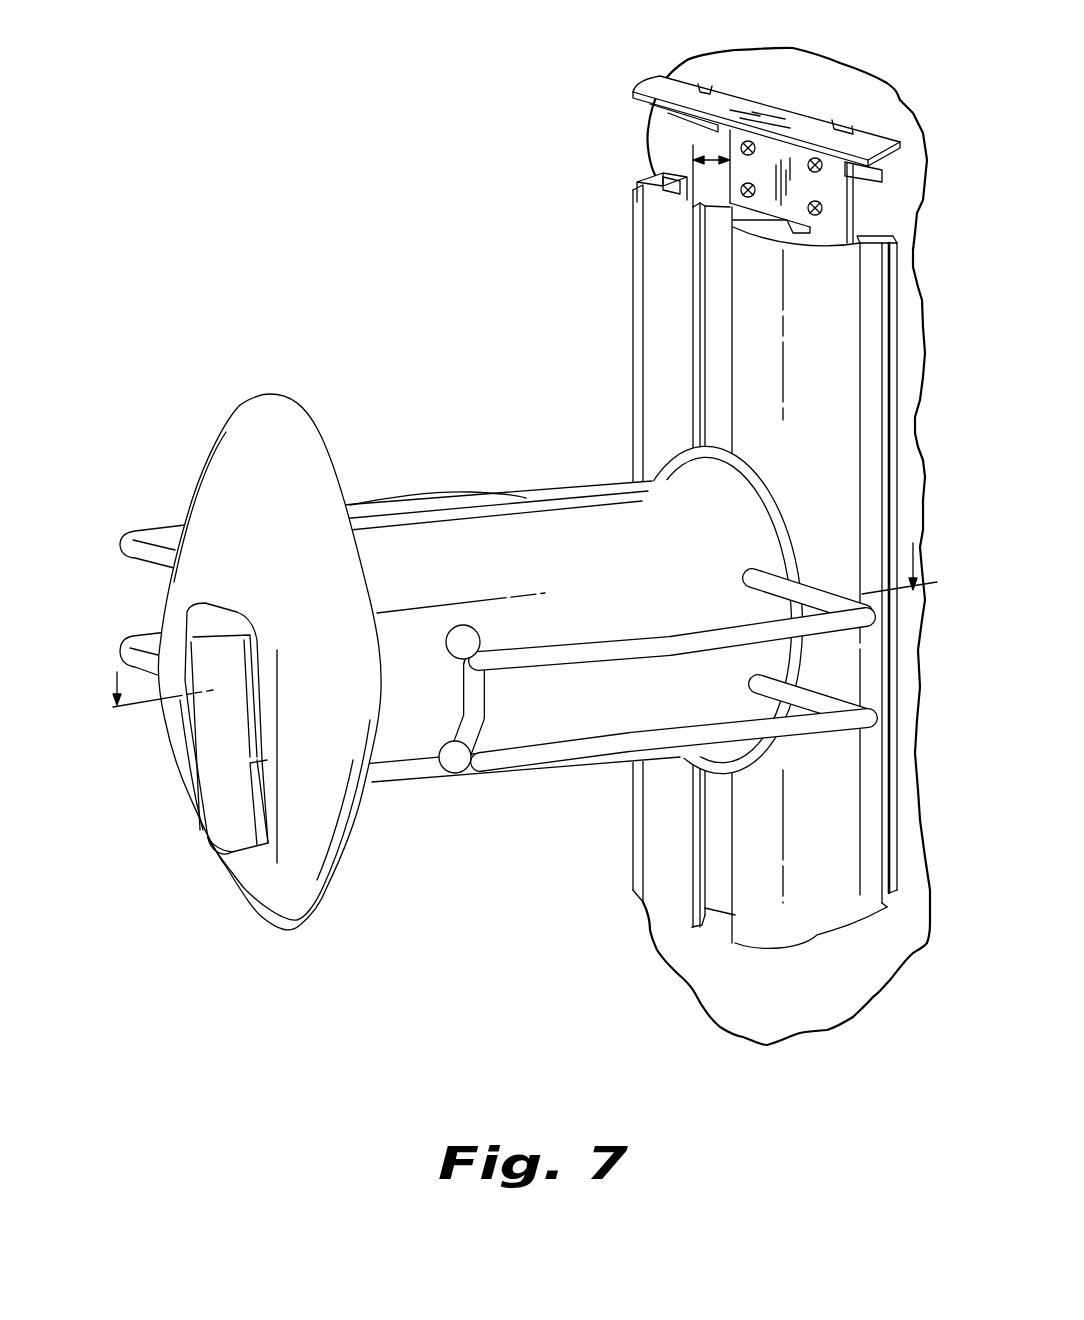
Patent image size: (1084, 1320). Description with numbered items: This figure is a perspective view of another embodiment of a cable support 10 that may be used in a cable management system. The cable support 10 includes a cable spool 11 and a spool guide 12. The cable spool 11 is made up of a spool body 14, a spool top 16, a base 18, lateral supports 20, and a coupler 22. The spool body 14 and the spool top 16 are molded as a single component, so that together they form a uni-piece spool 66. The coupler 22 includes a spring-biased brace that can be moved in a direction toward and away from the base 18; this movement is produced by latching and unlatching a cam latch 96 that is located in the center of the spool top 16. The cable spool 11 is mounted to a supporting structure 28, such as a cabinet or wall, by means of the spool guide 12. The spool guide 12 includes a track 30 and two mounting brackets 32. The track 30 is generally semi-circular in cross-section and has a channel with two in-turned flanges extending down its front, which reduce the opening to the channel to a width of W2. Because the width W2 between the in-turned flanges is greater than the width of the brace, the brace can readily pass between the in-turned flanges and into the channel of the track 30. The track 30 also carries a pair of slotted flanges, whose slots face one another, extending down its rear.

The cable support 10 is at (388, 143).
The cable spool 11 is at (422, 353).
The spool guide 12 is at (605, 313).
The spool body 14 is at (558, 508).
The spool top 16 is at (217, 450).
The base 18 is at (764, 495).
The lateral supports 20 is at (613, 643).
The coupler 22 is at (180, 793).
The supporting structure 28 is at (858, 100).
The track 30 is at (628, 832).
The mounting brackets 32 is at (741, 82).
The uni-piece spool 66 is at (432, 462).
The cam latch 96 is at (218, 834).
The width W2 is at (692, 152).